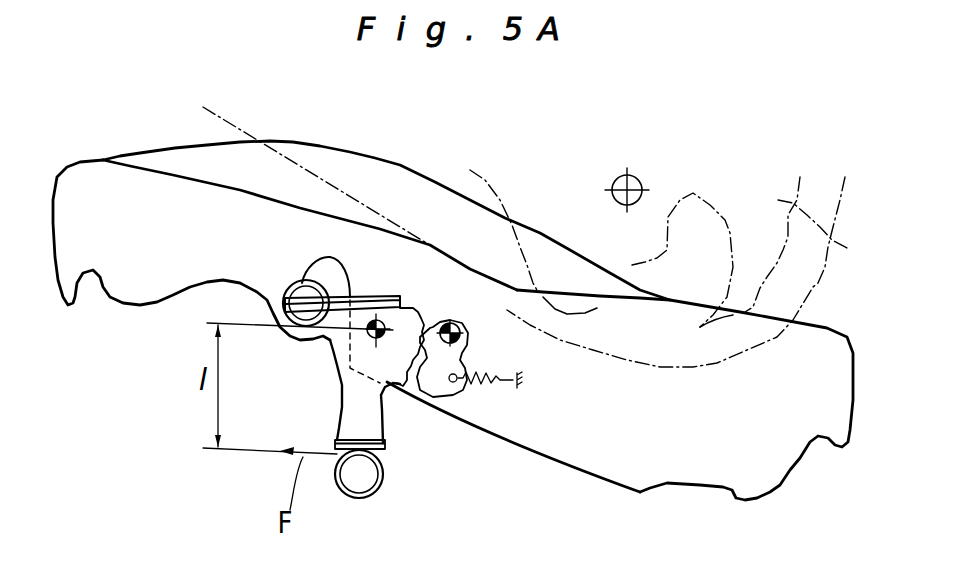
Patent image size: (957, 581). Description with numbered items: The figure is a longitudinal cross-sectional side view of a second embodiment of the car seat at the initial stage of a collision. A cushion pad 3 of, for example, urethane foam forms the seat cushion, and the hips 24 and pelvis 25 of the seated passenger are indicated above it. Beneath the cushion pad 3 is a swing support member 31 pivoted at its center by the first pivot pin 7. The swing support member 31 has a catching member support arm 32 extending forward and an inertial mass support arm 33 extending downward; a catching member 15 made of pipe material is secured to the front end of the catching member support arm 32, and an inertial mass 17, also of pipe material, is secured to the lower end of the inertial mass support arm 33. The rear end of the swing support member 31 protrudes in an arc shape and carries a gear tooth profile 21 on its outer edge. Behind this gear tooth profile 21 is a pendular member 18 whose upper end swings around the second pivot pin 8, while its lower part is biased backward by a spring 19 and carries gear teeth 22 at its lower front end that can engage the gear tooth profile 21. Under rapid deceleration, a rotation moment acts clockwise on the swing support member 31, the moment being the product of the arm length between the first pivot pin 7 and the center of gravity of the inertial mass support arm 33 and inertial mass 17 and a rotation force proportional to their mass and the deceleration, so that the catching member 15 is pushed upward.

The cushion pad 3 is at (115, 197).
The catching member 15 is at (320, 257).
The first pivot pin 7 is at (396, 295).
The gear tooth profile 21 is at (414, 308).
The second pivot pin 8 is at (453, 323).
The gear teeth 22 is at (467, 345).
The pelvis 25 is at (847, 248).
The hips 24 is at (825, 267).
The catching member support arm 32 is at (313, 337).
The swing support member 31 is at (328, 347).
The inertial mass support arm 33 is at (368, 420).
The pendular member 18 is at (438, 377).
The spring 19 is at (482, 390).
The inertial mass 17 is at (360, 487).